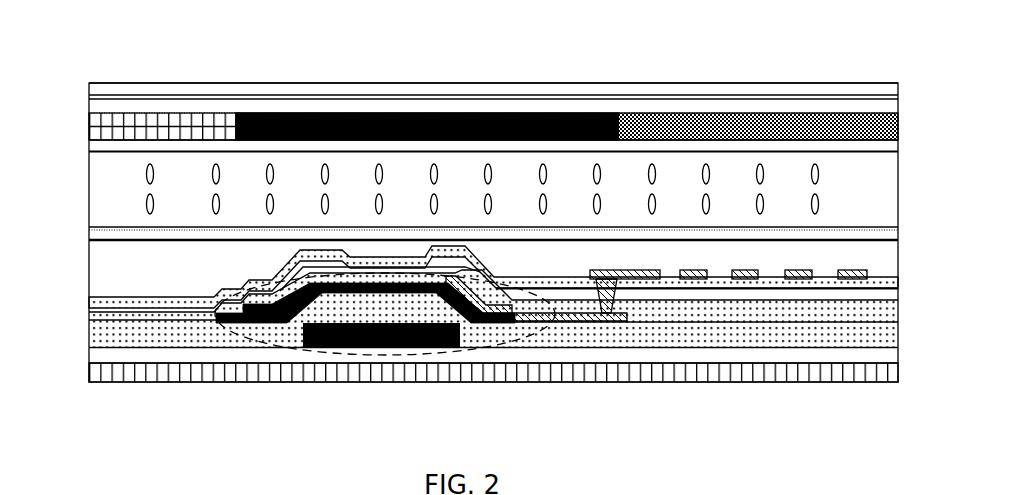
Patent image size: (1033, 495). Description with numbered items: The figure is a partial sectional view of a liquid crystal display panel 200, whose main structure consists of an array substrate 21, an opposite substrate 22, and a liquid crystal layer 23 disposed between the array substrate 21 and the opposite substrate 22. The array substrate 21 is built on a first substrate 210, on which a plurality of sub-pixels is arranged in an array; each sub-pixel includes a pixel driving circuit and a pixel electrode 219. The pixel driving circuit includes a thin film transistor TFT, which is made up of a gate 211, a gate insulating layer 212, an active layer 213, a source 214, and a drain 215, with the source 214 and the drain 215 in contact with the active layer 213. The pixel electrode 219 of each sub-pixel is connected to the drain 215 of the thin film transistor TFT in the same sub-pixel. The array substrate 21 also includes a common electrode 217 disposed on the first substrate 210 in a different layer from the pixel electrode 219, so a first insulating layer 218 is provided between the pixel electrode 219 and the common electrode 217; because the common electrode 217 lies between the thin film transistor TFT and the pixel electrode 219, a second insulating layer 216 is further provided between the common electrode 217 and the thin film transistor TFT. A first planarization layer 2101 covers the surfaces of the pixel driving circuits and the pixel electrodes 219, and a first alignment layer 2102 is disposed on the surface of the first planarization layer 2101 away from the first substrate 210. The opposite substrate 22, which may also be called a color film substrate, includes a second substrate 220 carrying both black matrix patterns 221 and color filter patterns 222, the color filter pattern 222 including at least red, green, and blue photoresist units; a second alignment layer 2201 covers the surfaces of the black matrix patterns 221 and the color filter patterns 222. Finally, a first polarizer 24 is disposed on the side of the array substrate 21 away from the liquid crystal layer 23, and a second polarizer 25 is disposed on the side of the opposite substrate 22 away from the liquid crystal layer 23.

The liquid crystal display panel 200 is at (43, 48).
The array substrate 21 is at (491, 318).
The opposite substrate 22 is at (903, 99).
The liquid crystal layer 23 is at (876, 203).
The first polarizer 24 is at (162, 372).
The second polarizer 25 is at (337, 95).
The first substrate 210 is at (627, 353).
The gate 211 is at (362, 350).
The gate insulating layer 212 is at (470, 340).
The active layer 213 is at (280, 325).
The source 214 is at (228, 318).
The drain 215 is at (553, 303).
The second insulating layer 216 is at (722, 310).
The common electrode 217 is at (783, 292).
The first insulating layer 218 is at (817, 281).
The pixel electrode 219 is at (860, 272).
The second substrate 220 is at (415, 110).
The black matrix pattern 221 is at (530, 115).
The color filter pattern 222 is at (643, 132).
The first planarization layer 2101 is at (133, 257).
The first alignment layer 2102 is at (123, 238).
The second alignment layer 2201 is at (118, 143).
The thin film transistor TFT is at (223, 323).